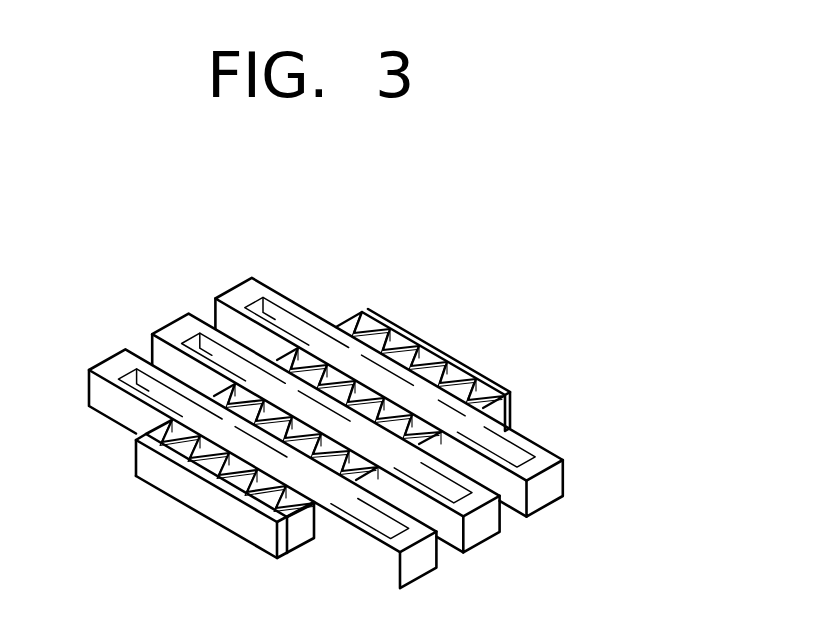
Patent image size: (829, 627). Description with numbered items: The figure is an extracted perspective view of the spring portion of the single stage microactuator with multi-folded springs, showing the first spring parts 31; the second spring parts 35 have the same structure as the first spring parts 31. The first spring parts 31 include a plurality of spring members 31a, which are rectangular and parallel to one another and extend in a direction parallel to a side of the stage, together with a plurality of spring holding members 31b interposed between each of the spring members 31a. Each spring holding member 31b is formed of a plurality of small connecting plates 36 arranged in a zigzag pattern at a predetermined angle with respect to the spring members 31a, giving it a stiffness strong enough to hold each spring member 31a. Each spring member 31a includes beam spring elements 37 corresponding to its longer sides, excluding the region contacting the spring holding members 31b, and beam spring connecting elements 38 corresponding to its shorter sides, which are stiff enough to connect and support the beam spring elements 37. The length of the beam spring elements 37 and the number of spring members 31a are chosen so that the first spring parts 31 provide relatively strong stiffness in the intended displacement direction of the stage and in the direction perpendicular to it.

The first spring parts 31 is at (454, 283).
The second spring parts 35 is at (377, 405).
The spring members 31a is at (578, 478).
The spring holding members 31b is at (470, 373).
The small connecting plates 36 is at (288, 345).
The beam spring elements 37 is at (138, 393).
The beam spring connecting elements 38 is at (177, 328).